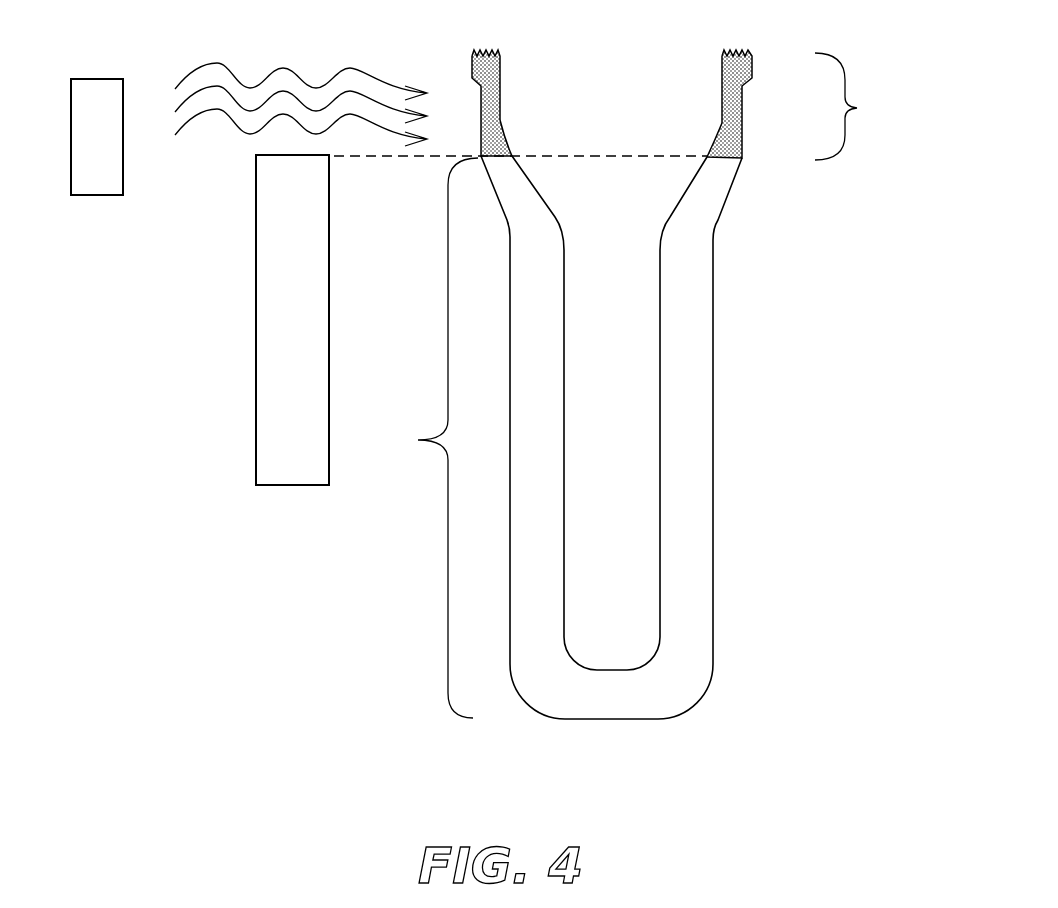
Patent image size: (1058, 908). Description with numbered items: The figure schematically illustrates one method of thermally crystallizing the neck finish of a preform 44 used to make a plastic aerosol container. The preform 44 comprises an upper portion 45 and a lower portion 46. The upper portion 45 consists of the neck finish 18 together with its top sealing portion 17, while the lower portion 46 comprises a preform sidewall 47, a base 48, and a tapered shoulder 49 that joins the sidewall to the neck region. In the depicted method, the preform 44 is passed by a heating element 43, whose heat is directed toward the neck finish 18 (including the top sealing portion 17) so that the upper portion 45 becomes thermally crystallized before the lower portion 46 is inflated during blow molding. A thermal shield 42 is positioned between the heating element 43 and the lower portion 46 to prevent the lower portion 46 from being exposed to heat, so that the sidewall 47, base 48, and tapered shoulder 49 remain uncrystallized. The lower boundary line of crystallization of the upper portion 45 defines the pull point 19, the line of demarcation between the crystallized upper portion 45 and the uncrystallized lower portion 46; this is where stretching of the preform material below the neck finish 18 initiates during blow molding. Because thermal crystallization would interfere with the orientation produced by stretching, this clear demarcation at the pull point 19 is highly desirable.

The top sealing portion 17 is at (752, 72).
The neck finish 18 is at (742, 110).
The pull point 19 is at (707, 157).
The thermal shield 42 is at (255, 328).
The heating element 43 is at (109, 78).
The preform 44 is at (662, 425).
The upper portion 45 is at (694, 105).
The lower portion 46 is at (432, 438).
The preform sidewall 47 is at (714, 468).
The base 48 is at (665, 718).
The tapered shoulder 49 is at (730, 185).